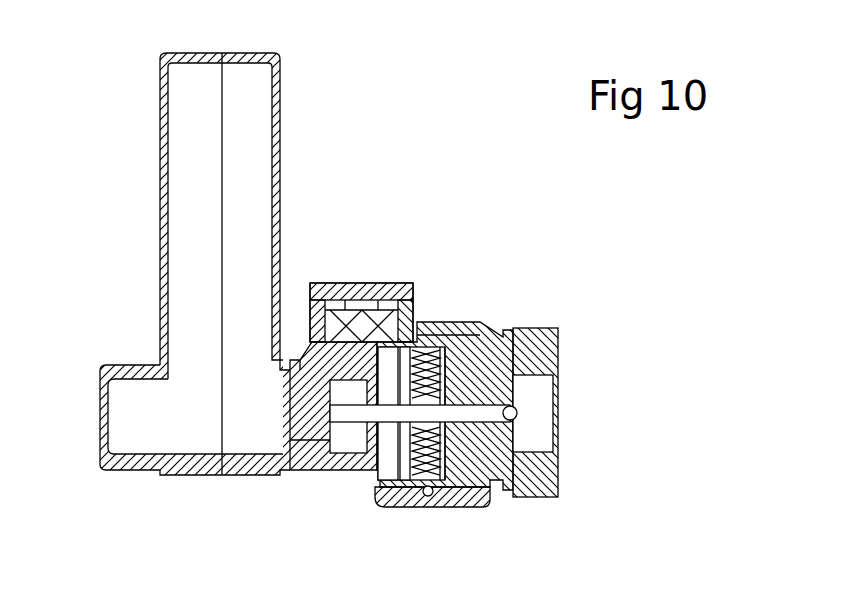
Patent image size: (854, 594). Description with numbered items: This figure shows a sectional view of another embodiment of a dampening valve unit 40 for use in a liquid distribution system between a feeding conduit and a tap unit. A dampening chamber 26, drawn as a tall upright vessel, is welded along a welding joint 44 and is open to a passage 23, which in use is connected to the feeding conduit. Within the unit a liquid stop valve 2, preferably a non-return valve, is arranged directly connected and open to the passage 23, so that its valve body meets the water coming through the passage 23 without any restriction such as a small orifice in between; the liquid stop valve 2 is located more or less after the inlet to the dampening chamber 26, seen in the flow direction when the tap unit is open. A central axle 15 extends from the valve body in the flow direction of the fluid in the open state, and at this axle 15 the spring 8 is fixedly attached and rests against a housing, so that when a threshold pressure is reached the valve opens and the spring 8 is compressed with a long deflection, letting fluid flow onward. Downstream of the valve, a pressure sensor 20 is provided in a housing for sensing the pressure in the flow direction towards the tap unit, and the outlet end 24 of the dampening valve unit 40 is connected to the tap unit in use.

The liquid stop valve 2 is at (323, 415).
The spring 8 is at (432, 400).
The central axle 15 is at (487, 412).
The pressure sensor 20 is at (380, 281).
The passage 23 is at (196, 433).
The outlet end 24 is at (560, 348).
The dampening chamber 26 is at (250, 215).
The dampening valve unit 40 is at (403, 196).
The welding joint 44 is at (222, 150).